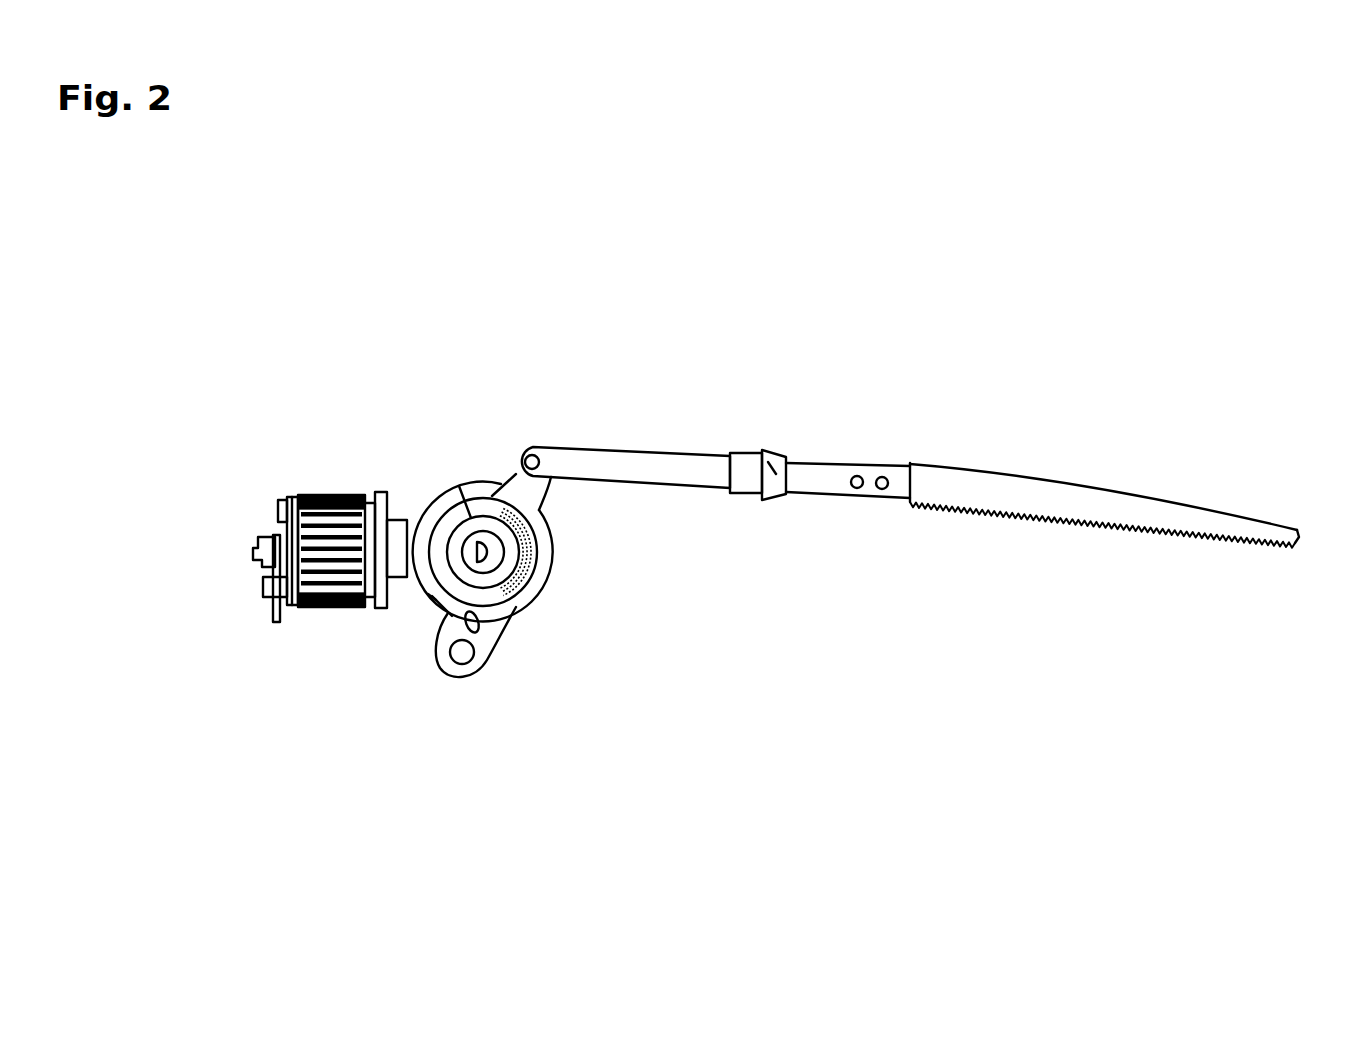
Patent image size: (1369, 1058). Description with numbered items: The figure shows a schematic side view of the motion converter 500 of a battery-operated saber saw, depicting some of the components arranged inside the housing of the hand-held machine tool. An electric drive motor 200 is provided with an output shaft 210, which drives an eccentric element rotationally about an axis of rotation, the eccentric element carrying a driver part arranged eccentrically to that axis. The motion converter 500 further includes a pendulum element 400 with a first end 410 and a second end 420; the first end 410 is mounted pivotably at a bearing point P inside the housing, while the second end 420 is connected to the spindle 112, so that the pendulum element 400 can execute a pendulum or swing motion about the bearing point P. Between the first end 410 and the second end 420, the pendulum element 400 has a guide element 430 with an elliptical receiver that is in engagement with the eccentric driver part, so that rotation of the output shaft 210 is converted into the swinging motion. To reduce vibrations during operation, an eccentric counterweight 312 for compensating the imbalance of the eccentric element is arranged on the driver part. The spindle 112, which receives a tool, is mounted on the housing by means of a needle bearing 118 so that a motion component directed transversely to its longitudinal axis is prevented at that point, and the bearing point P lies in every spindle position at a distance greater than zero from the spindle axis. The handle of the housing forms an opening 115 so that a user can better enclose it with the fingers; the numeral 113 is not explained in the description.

The electric drive motor 200 is at (333, 495).
The output shaft 210 is at (413, 520).
The spindle 112 is at (618, 467).
The needle bearing 118 is at (763, 467).
The saw blade 113 is at (1030, 490).
The opening 115 is at (1298, 533).
The second end 420 is at (551, 514).
The guide element 430 is at (536, 597).
The first end 410 is at (474, 652).
The pendulum element 400 is at (716, 521).
The eccentric counterweight 312 is at (431, 597).
The bearing point P is at (462, 652).
The motion converter 500 is at (820, 813).